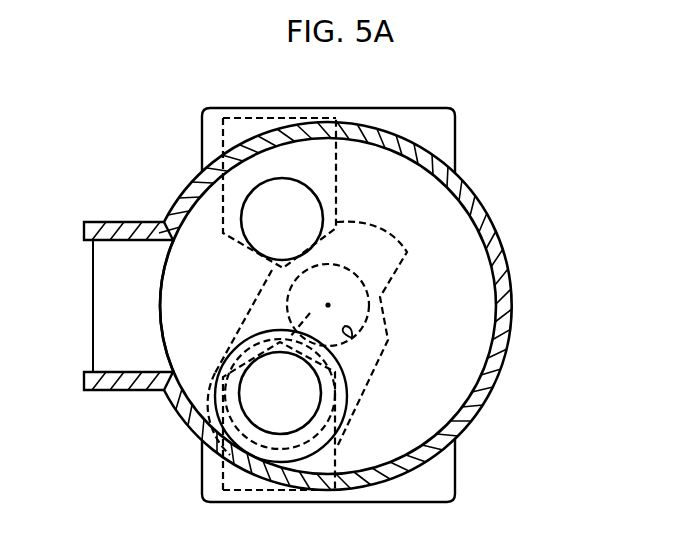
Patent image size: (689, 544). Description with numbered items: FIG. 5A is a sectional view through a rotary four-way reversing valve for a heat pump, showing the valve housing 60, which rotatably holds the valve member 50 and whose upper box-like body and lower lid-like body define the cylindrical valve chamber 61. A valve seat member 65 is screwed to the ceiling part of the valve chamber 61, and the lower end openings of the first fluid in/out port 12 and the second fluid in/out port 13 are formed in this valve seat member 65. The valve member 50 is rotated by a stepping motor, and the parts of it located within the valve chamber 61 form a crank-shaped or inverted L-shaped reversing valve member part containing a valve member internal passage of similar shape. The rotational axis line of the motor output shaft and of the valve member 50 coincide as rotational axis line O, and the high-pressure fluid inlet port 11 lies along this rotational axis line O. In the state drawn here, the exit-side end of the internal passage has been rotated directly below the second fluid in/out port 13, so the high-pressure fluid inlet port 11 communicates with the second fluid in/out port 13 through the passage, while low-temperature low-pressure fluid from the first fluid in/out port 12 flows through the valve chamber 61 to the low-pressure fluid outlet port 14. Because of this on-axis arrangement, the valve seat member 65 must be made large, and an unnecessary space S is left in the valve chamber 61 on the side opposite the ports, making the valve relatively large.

The valve housing 60 is at (495, 225).
The valve seat member 65 is at (447, 264).
The low-pressure fluid outlet port 14 is at (108, 262).
The valve chamber 61 is at (206, 265).
The first fluid in/out port 12 is at (292, 189).
The second fluid in/out port 13 is at (318, 405).
The valve member 50 is at (386, 303).
The high-pressure fluid inlet port 11 is at (362, 340).
The rotational axis line O is at (329, 304).
The unnecessary space S is at (458, 364).